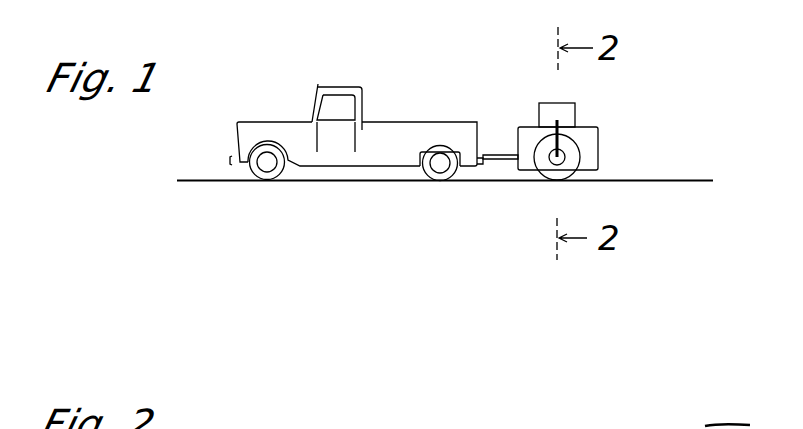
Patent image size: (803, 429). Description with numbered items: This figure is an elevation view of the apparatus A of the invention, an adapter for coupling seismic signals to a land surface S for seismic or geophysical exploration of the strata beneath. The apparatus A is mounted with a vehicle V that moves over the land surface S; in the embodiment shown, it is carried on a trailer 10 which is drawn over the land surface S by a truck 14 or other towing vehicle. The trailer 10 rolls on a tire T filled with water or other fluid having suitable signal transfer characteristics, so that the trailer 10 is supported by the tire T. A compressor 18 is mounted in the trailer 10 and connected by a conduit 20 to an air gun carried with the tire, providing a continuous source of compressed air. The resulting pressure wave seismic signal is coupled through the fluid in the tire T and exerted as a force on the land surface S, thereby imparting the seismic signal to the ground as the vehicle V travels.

The truck 14 is at (318, 85).
The trailer 10 is at (518, 127).
The compressor 18 is at (553, 103).
The conduit 20 is at (570, 140).
The apparatus A is at (586, 104).
The tire T is at (578, 153).
The land surface S is at (655, 181).
The vehicle V is at (530, 192).